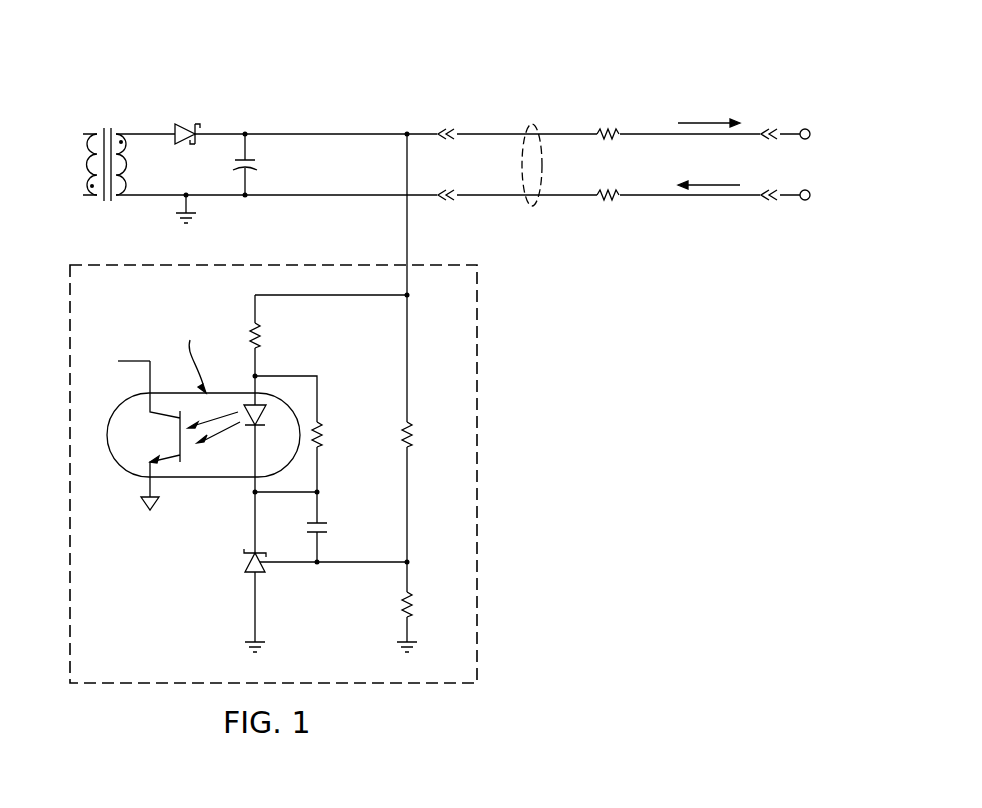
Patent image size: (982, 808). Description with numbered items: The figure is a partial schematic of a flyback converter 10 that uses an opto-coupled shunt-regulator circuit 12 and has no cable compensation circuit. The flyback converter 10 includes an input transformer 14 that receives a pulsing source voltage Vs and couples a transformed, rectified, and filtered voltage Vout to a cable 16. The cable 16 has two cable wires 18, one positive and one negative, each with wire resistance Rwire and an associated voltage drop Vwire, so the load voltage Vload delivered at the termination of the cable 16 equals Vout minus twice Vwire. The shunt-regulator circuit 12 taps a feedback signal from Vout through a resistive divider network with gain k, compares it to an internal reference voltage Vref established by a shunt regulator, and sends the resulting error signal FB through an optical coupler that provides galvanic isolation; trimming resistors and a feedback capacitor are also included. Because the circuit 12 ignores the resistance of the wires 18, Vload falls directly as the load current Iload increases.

The flyback converter 10 is at (270, 45).
The opto-coupled shunt-regulator circuit 12 is at (162, 637).
The input transformer 14 is at (102, 118).
The cable 16 is at (535, 125).
The cable wire 18 is at (478, 133).